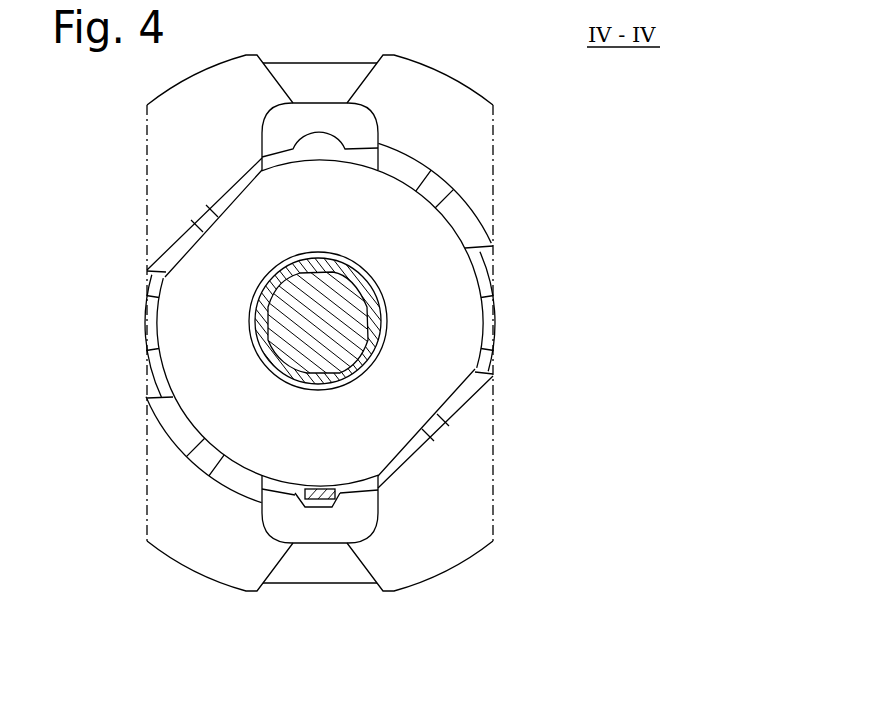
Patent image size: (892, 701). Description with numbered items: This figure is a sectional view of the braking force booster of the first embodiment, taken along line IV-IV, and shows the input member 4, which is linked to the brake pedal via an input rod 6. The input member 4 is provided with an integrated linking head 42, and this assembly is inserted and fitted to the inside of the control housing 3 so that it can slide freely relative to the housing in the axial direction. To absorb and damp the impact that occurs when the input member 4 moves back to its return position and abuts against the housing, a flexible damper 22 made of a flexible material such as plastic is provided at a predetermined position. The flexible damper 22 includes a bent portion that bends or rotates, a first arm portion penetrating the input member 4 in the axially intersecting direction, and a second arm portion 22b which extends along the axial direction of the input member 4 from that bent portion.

The control housing 3 is at (258, 144).
The input member 4 is at (341, 392).
The input rod 6 is at (355, 327).
The linking head 42 is at (367, 370).
The flexible damper 22 is at (313, 503).
The second arm portion 22b is at (318, 504).